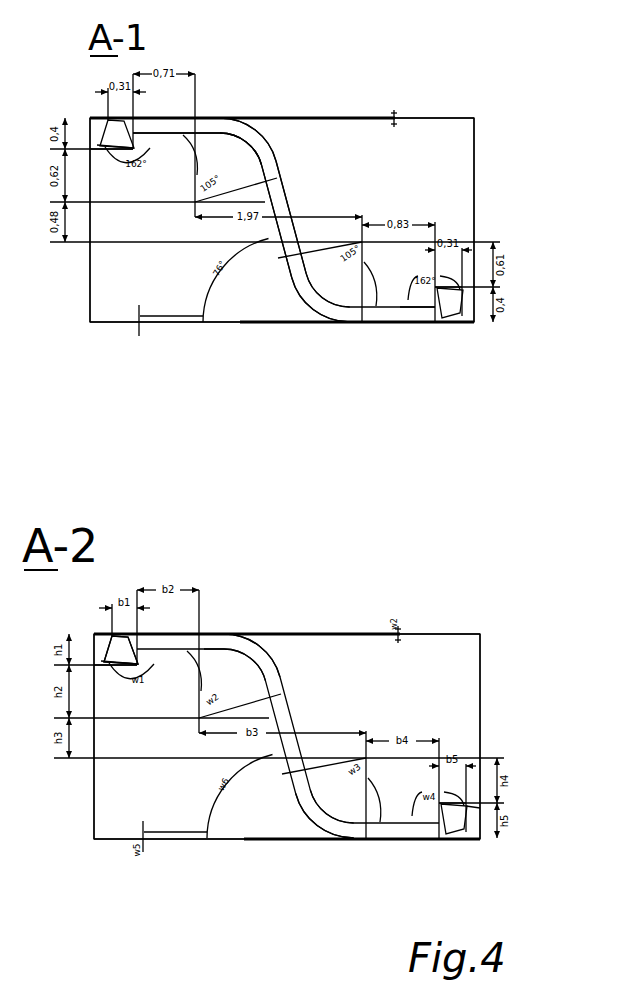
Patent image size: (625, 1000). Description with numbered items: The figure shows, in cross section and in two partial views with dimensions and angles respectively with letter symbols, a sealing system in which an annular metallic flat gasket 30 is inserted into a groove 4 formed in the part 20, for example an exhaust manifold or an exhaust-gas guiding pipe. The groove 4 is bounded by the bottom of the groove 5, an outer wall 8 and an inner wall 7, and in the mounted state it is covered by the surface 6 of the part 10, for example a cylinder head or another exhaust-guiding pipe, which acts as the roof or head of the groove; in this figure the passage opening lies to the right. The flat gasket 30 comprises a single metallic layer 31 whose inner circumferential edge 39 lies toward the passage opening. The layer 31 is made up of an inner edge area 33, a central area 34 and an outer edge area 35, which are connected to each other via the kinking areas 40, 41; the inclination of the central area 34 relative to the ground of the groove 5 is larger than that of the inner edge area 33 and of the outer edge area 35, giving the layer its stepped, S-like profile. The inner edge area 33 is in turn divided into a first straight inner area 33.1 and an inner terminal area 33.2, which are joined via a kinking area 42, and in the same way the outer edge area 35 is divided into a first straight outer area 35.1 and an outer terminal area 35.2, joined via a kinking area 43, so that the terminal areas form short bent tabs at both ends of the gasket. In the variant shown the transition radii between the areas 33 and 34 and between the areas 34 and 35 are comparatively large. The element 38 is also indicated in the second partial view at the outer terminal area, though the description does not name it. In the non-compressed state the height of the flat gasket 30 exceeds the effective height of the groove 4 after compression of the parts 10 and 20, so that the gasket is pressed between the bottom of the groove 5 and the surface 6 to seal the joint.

The groove 4 is at (425, 125).
The bottom of the groove 5 is at (108, 320).
The surface of part 10 / head of the groove 6 is at (447, 118).
The inner wall of the groove 7 is at (474, 190).
The outer wall of the groove 8 is at (90, 272).
The first part / cylinder head 10 is at (298, 108).
The second part / exhaust manifold 20 is at (307, 350).
The metallic flat gasket 30 is at (262, 141).
The metallic layer 31 is at (265, 160).
The inner edge area 33 is at (398, 318).
The first straight inner area 33.1 is at (420, 318).
The inner terminal area 33.2 is at (453, 314).
The central area 34 is at (277, 248).
The outer edge area 35 is at (153, 124).
The first straight outer area 35.1 is at (173, 122).
The outer terminal area 35.2 is at (117, 128).
The tab edge 38 is at (100, 658).
The inner circumferential edge 39 is at (480, 826).
The kinking area 40 is at (308, 296).
The kinking area 41 is at (237, 141).
The kinking area 42 is at (447, 833).
The kinking area 43 is at (278, 207).